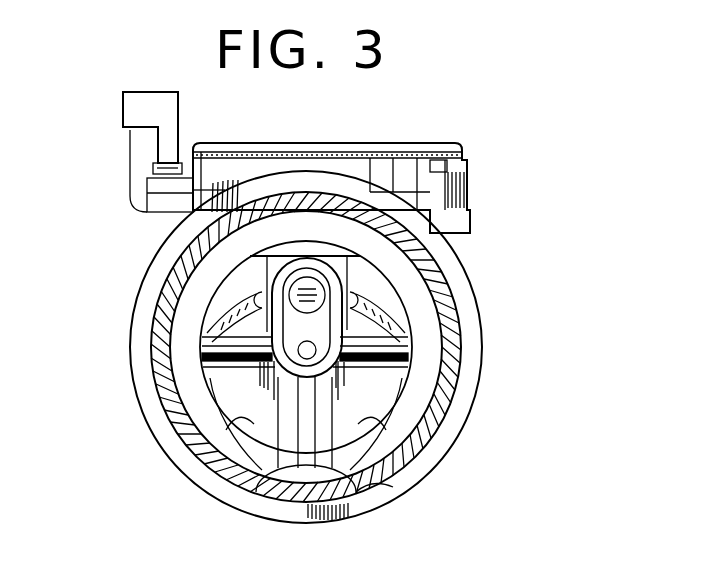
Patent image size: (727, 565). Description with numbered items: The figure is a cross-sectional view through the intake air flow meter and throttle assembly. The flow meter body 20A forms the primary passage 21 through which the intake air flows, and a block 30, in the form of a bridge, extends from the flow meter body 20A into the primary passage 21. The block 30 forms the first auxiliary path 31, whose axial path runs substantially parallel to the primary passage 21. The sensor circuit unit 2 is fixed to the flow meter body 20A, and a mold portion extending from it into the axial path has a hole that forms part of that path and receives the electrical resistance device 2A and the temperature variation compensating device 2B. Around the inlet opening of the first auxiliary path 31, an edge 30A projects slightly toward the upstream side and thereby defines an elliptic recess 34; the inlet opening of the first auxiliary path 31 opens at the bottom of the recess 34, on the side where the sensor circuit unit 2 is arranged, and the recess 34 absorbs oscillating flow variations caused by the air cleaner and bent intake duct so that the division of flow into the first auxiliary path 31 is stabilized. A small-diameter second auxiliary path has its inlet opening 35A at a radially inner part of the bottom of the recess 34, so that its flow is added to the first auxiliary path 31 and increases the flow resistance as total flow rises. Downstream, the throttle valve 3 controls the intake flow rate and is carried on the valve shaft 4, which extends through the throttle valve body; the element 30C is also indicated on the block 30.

The sensor circuit unit 2 is at (386, 160).
The electrical resistance device 2A is at (228, 318).
The temperature variation compensating device 2B is at (299, 275).
The throttle valve 3 is at (452, 296).
The valve shaft 4 is at (320, 350).
The flow meter body 20A is at (168, 431).
The primary passage 21 is at (185, 452).
The block 30 is at (400, 493).
The edge 30A is at (262, 371).
The wheel rim hatched band 30C is at (233, 512).
The first auxiliary path 31 is at (288, 262).
The elliptic recess 34 is at (255, 333).
The inlet opening of second auxiliary path 35A is at (390, 392).